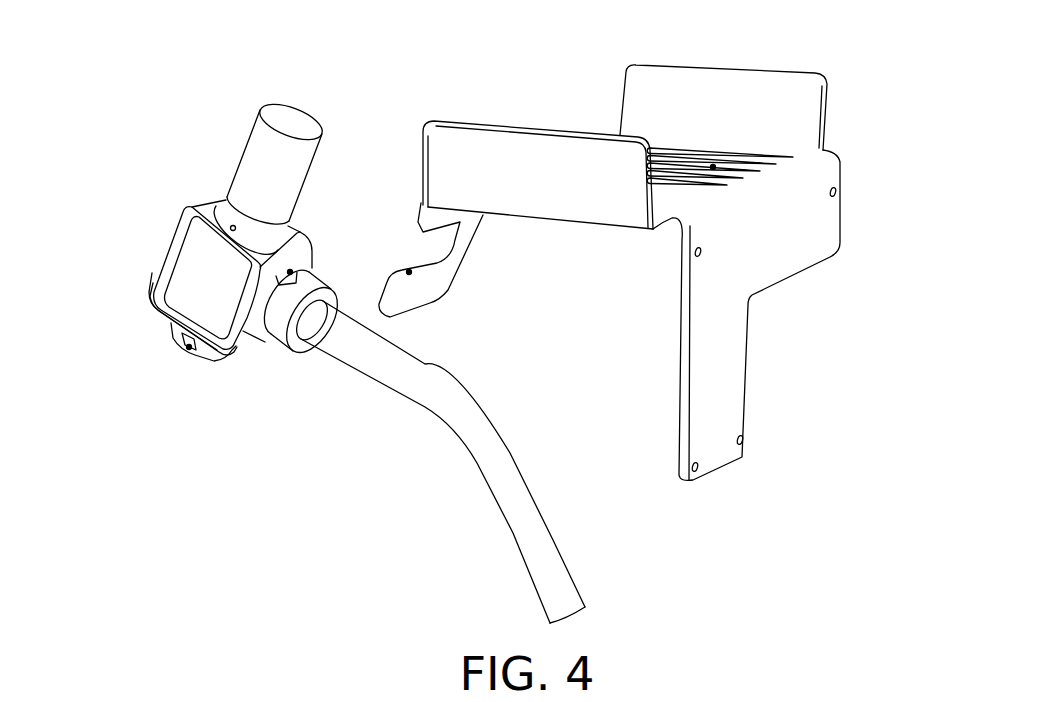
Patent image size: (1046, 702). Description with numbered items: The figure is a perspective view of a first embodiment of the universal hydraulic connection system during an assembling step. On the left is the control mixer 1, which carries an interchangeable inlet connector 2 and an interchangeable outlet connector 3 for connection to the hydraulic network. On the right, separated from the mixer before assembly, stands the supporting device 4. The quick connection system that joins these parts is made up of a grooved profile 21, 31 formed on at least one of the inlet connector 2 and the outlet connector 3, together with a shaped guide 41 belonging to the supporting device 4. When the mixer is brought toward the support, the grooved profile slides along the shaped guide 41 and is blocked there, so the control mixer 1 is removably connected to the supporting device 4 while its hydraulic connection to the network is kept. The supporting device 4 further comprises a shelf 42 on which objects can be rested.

The control mixer 1 is at (138, 248).
The interchangeable inlet connector 2 is at (273, 382).
The grooved profile 21 is at (290, 272).
The interchangeable outlet connector 3 is at (159, 323).
The grooved profile 31 is at (187, 347).
The supporting device 4 is at (779, 313).
The shaped guide 41 is at (409, 272).
The shelf 42 is at (713, 167).